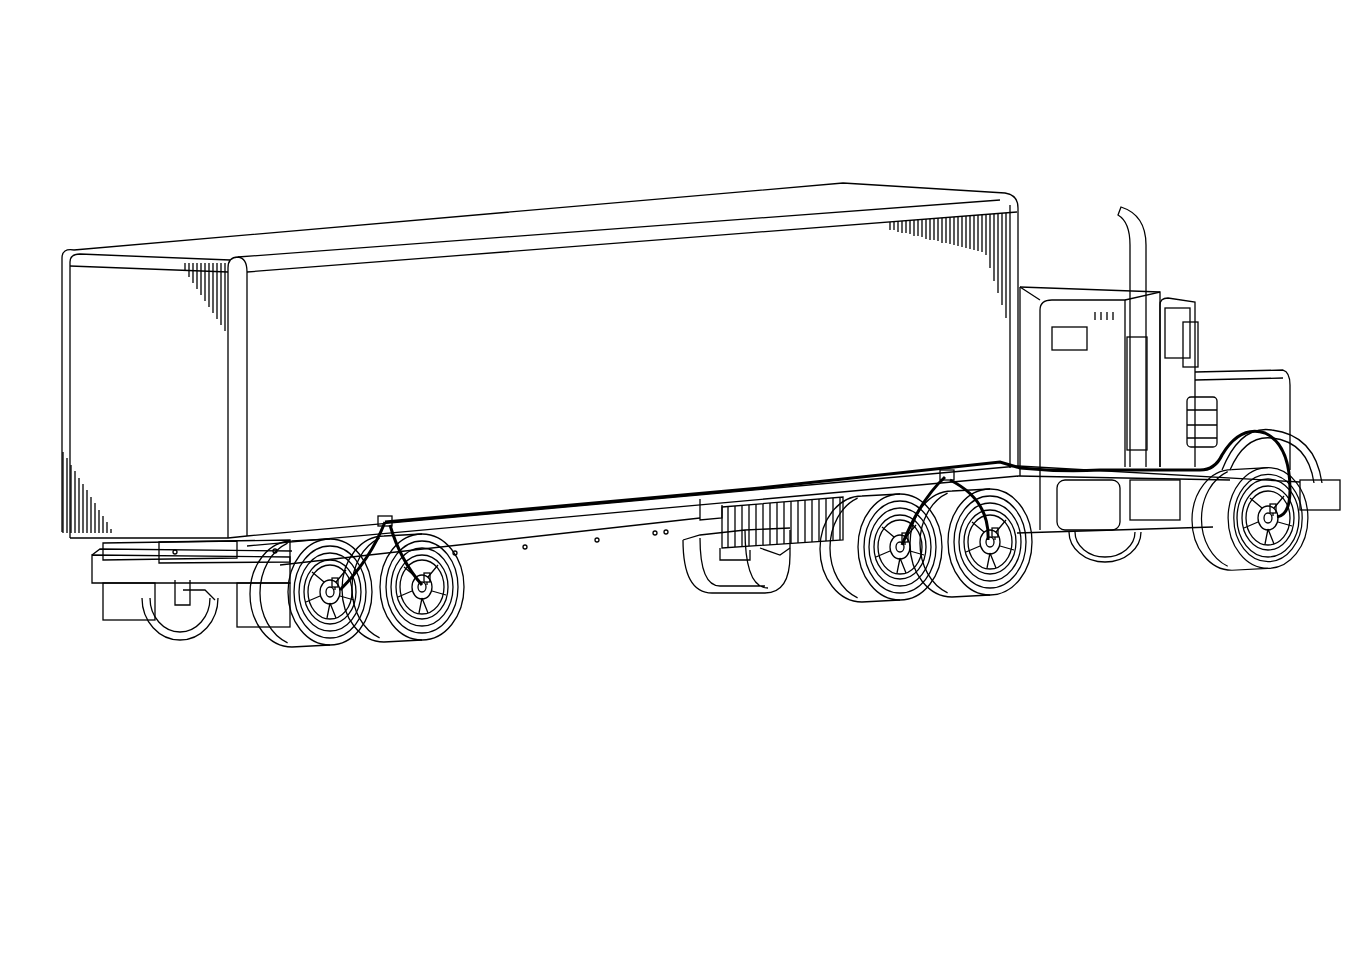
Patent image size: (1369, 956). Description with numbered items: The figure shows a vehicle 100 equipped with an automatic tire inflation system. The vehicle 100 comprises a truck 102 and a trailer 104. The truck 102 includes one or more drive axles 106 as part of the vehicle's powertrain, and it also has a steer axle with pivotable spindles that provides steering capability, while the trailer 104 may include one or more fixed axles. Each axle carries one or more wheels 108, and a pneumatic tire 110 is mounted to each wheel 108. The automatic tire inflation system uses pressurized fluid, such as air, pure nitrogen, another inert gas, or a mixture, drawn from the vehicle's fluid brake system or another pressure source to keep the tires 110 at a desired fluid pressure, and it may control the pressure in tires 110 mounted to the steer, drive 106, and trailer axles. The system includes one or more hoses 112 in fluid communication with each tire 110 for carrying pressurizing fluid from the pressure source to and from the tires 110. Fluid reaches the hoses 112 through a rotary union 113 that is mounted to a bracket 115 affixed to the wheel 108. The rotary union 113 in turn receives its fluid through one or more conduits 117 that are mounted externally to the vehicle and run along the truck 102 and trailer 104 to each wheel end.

The vehicle 100 is at (328, 78).
The truck 102 is at (1050, 285).
The trailer 104 is at (552, 207).
The drive axle 106 is at (803, 598).
The wheel 108 is at (317, 640).
The pneumatic tire 110 is at (317, 650).
The hose 112 is at (328, 588).
The rotary union 113 is at (303, 600).
The bracket 115 is at (320, 628).
The conduit 117 is at (1238, 420).